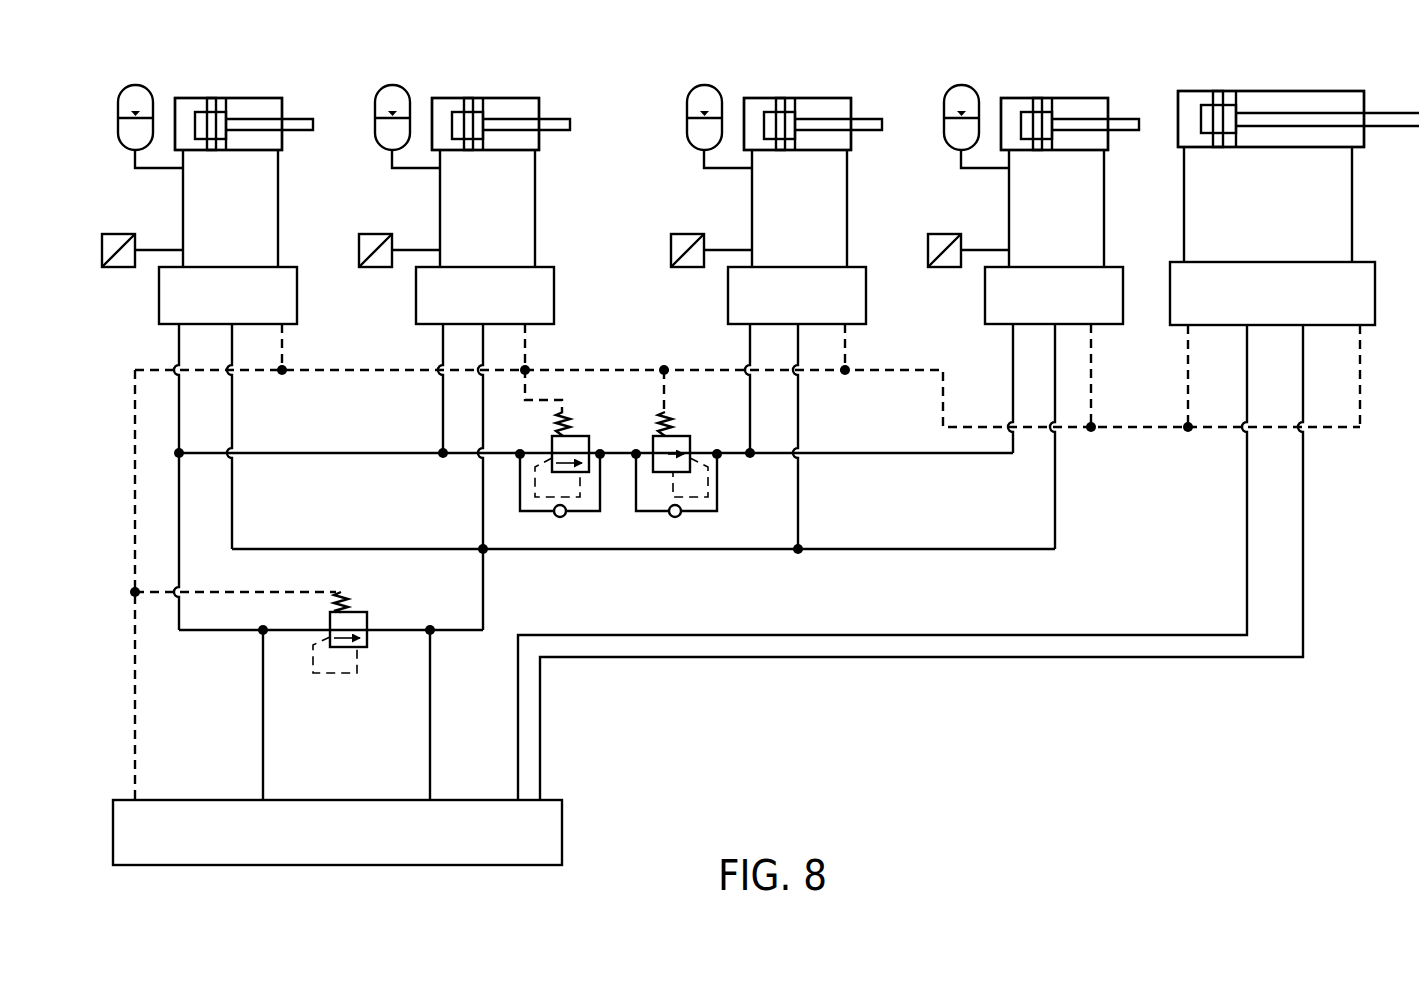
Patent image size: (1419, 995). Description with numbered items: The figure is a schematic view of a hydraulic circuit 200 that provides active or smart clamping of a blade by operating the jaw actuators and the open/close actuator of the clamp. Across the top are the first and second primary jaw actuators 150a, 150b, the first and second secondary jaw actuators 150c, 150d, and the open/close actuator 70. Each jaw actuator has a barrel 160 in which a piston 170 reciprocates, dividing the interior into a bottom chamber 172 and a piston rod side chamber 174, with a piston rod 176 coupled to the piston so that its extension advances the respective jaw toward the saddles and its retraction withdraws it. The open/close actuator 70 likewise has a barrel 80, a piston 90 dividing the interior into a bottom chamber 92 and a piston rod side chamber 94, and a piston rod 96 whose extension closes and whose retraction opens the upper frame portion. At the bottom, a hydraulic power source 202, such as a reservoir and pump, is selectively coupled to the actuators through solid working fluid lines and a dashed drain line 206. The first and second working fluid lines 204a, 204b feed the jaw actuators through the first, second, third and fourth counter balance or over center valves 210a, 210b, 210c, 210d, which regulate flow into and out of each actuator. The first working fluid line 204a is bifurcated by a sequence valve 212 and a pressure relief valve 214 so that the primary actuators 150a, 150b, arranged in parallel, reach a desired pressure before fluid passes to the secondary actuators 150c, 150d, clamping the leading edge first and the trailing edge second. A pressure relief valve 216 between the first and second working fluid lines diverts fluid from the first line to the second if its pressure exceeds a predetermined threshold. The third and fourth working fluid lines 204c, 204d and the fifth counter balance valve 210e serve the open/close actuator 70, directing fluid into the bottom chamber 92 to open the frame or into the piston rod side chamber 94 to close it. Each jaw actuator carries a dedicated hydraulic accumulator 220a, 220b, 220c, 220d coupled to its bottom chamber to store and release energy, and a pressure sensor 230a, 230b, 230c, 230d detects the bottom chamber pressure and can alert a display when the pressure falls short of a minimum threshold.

The open/close actuator 70 is at (1289, 52).
The barrel 80 is at (1258, 91).
The piston 90 is at (1220, 91).
The bottom chamber 92 is at (1186, 132).
The piston rod side chamber 94 is at (1345, 100).
The piston rod 96 is at (1378, 113).
The first primary jaw actuator 150a is at (282, 58).
The second primary jaw actuator 150b is at (539, 58).
The first secondary jaw actuator 150c is at (851, 58).
The second secondary jaw actuator 150d is at (1108, 58).
The barrel 160 is at (252, 98).
The piston 170 is at (210, 98).
The bottom chamber 172 is at (186, 102).
The piston rod side chamber 174 is at (270, 107).
The piston rod 176 is at (304, 118).
The hydraulic circuit 200 is at (896, 755).
The hydraulic power source 202 is at (562, 820).
The first working fluid line 204a is at (263, 761).
The second working fluid line 204b is at (430, 770).
The third working fluid line 204c is at (518, 704).
The fourth working fluid line 204d is at (540, 754).
The drain line 206 is at (135, 708).
The first counter balance valve 210a is at (159, 323).
The second counter balance valve 210b is at (416, 323).
The third counter balance valve 210c is at (728, 323).
The fourth counter balance valve 210d is at (985, 323).
The fifth counter balance valve 210e is at (1170, 324).
The sequence valve 212 is at (588, 427).
The pressure relief valve 214 is at (684, 427).
The pressure relief valve 216 is at (366, 602).
The hydraulic accumulator 220a is at (118, 126).
The hydraulic accumulator 220b is at (376, 128).
The hydraulic accumulator 220c is at (687, 126).
The hydraulic accumulator 220d is at (945, 128).
The pressure sensor 230a is at (120, 234).
The pressure sensor 230b is at (377, 234).
The pressure sensor 230c is at (689, 234).
The pressure sensor 230d is at (946, 234).